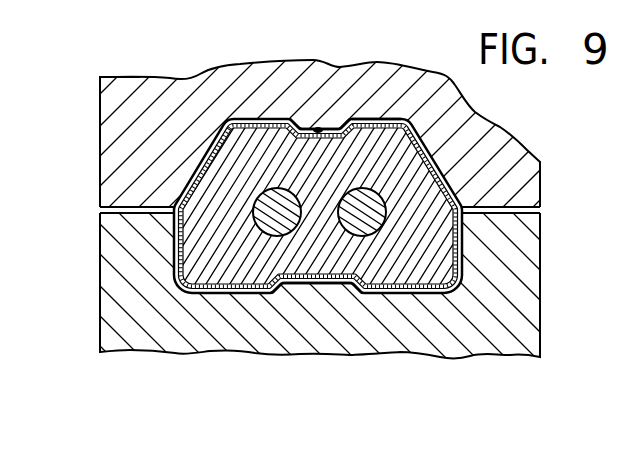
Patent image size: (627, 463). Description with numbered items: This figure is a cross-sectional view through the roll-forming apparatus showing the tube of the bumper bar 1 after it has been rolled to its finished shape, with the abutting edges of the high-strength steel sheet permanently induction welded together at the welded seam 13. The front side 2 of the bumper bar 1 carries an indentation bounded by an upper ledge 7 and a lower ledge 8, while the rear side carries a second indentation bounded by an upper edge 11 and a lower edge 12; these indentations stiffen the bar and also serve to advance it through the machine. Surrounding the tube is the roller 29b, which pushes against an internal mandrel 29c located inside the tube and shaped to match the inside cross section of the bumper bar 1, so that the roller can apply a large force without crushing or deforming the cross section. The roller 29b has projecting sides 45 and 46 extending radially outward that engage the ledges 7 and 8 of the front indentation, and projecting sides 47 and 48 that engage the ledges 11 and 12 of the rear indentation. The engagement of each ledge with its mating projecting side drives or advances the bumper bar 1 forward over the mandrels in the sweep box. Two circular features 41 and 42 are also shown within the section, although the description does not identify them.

The bumper bar 1 is at (503, 149).
The front side 2 is at (120, 0).
The upper ledge 7 is at (295, 284).
The lower ledge 8 is at (338, 284).
The upper edge 11 is at (270, 145).
The lower edge 12 is at (372, 143).
The welded seam 13 is at (318, 128).
The roller 29b is at (123, 176).
The internal mandrel 29c is at (463, 114).
The conductor 41 is at (280, 187).
The conductor 42 is at (370, 234).
The projecting side 45 is at (279, 284).
The projecting side 46 is at (362, 284).
The projecting side 47 is at (270, 145).
The projecting side 48 is at (372, 143).